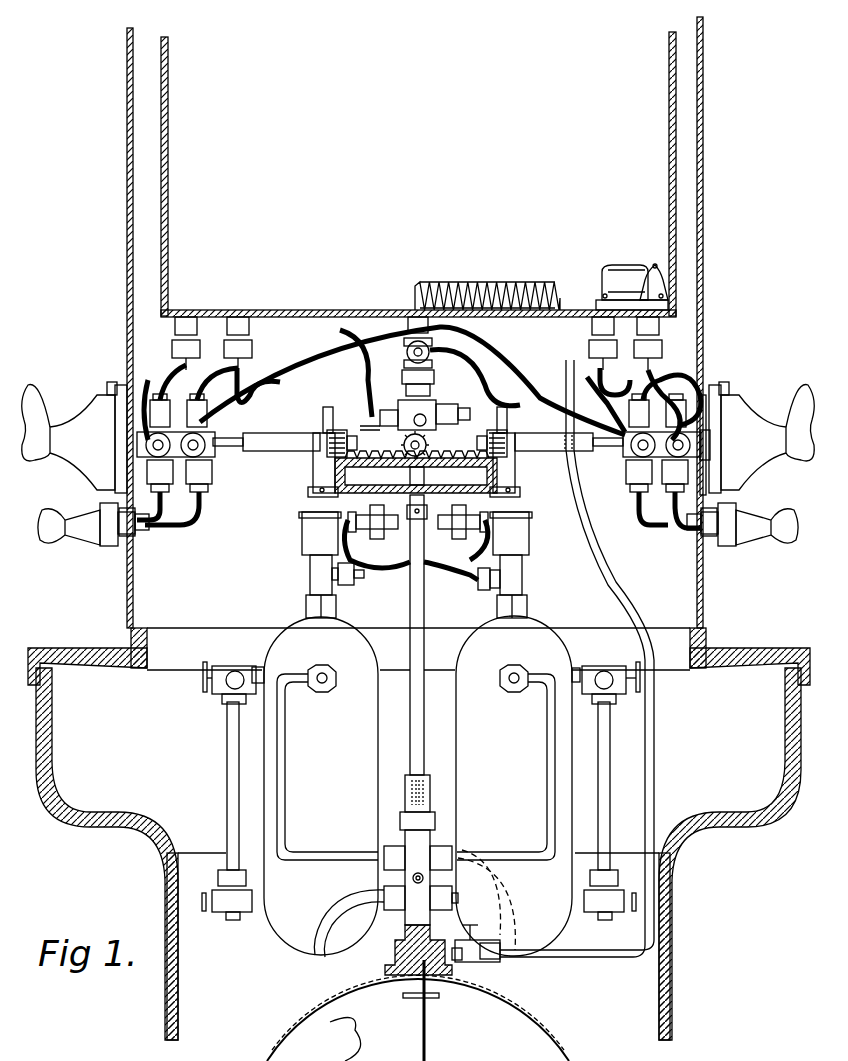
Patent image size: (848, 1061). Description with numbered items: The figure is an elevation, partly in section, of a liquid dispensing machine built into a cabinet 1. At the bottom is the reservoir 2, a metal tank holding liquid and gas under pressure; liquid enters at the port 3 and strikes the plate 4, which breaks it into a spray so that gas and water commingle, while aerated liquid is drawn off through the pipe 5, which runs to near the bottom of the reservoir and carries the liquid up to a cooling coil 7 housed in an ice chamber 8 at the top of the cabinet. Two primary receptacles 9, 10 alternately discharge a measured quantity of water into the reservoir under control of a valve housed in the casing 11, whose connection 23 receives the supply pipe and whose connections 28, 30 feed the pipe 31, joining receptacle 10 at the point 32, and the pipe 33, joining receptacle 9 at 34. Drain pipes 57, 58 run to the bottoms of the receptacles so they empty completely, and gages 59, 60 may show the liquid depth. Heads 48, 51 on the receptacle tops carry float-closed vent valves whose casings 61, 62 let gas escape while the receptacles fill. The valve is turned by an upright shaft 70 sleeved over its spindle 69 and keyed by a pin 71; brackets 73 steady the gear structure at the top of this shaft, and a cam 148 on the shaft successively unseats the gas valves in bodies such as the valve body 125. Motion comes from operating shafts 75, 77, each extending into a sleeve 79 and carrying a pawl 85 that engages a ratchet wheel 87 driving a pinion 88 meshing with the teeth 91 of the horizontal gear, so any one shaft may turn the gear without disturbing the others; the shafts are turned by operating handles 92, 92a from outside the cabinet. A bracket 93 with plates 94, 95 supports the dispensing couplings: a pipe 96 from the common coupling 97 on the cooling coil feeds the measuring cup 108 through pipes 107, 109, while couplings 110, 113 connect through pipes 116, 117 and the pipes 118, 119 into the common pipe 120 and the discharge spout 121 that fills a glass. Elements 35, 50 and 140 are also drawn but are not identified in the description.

The cabinet 1 is at (419, 834).
The reservoir 2 is at (745, 287).
The port 3 is at (422, 975).
The plate 4 is at (410, 998).
The pipe 5 is at (660, 790).
The cooling coil 7 is at (470, 290).
The ice chamber 8 is at (670, 104).
The primary receptacle 9 is at (315, 786).
The primary receptacle 10 is at (518, 786).
The valve casing 11 is at (405, 925).
The connection 23 is at (400, 818).
The connection 28 is at (455, 853).
The connection 30 is at (385, 848).
The pipe 31 is at (543, 816).
The connection point 32 is at (514, 668).
The pipe 33 is at (300, 780).
The connection point 34 is at (332, 686).
The nut 35 is at (432, 838).
The head 48 is at (522, 578).
The valve 50 is at (350, 585).
The head 51 is at (310, 575).
The pipe 57 is at (462, 888).
The pipe 58 is at (380, 892).
The gage 59 is at (228, 786).
The gage 60 is at (606, 800).
The valve casing 61 is at (529, 537).
The valve casing 62 is at (302, 537).
The spindle 69 is at (408, 795).
The upright shaft 70 is at (424, 730).
The pin 71 is at (422, 790).
The bracket 73 is at (265, 490).
The shaft 75 is at (603, 450).
The shaft 77 is at (245, 425).
The sleeve 79 is at (301, 484).
The pawl 85 is at (328, 430).
The ratchet wheel 87 is at (350, 430).
The pinion 88 is at (460, 435).
The teeth 91 is at (630, 440).
The operating handle 92 is at (80, 400).
The handle 92a is at (790, 400).
The bracket 93 is at (700, 446).
The plate 94 is at (700, 457).
The plate 95 is at (160, 405).
The pipe 96 is at (490, 398).
The common coupling 97 is at (410, 335).
The pipe 107 is at (212, 362).
The measuring cup 108 is at (620, 280).
The pipe 109 is at (150, 380).
The coupling 110 is at (215, 455).
The coupling 113 is at (140, 447).
The pipe 116 is at (618, 342).
The pipe 117 is at (722, 373).
The pipe 118 is at (165, 512).
The pipe 119 is at (182, 525).
The common pipe 120 is at (690, 528).
The discharge spout 121 is at (55, 518).
The valve body 125 is at (365, 515).
The tube 140 is at (442, 575).
The cam 148 is at (440, 520).